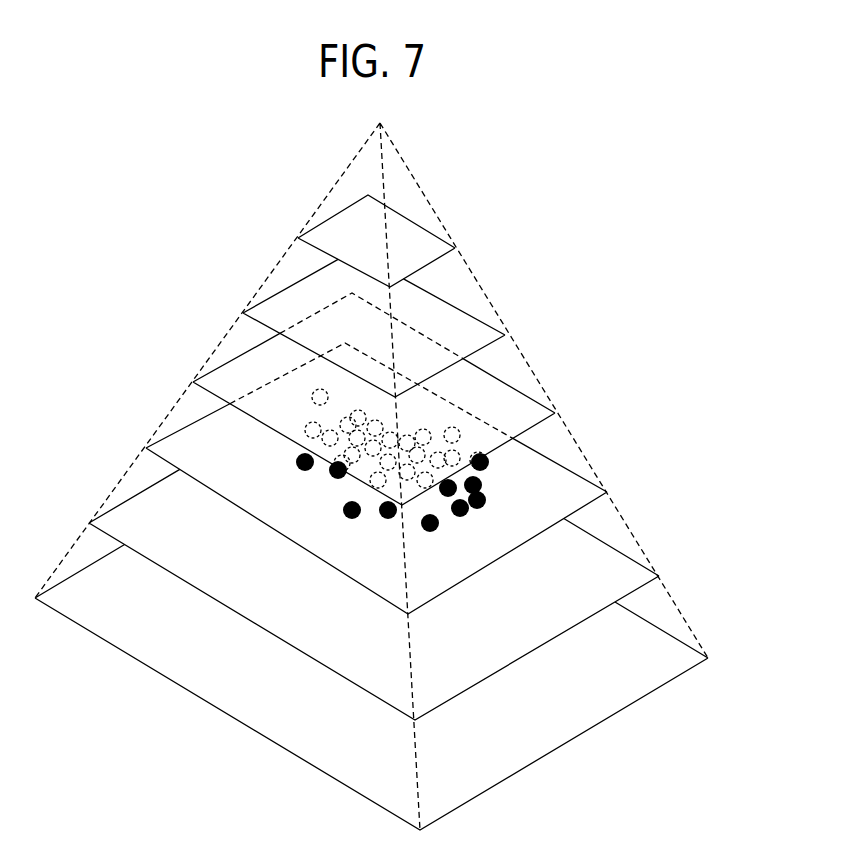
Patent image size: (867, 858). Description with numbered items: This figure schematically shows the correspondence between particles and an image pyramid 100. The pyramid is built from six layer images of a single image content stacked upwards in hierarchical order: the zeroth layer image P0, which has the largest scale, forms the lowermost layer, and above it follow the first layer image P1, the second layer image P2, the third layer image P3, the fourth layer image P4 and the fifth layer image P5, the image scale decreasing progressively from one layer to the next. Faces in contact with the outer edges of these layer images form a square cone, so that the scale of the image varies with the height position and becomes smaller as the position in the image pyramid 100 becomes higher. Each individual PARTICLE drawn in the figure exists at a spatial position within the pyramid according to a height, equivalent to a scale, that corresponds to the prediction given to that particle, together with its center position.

The image pyramid 100 is at (230, 166).
The zeroth layer image P0 is at (670, 655).
The first layer image P1 is at (618, 570).
The second layer image P2 is at (568, 500).
The third layer image P3 is at (518, 408).
The fourth layer image P4 is at (478, 330).
The fifth layer image P5 is at (432, 250).
The particle PARTICLE is at (500, 483).